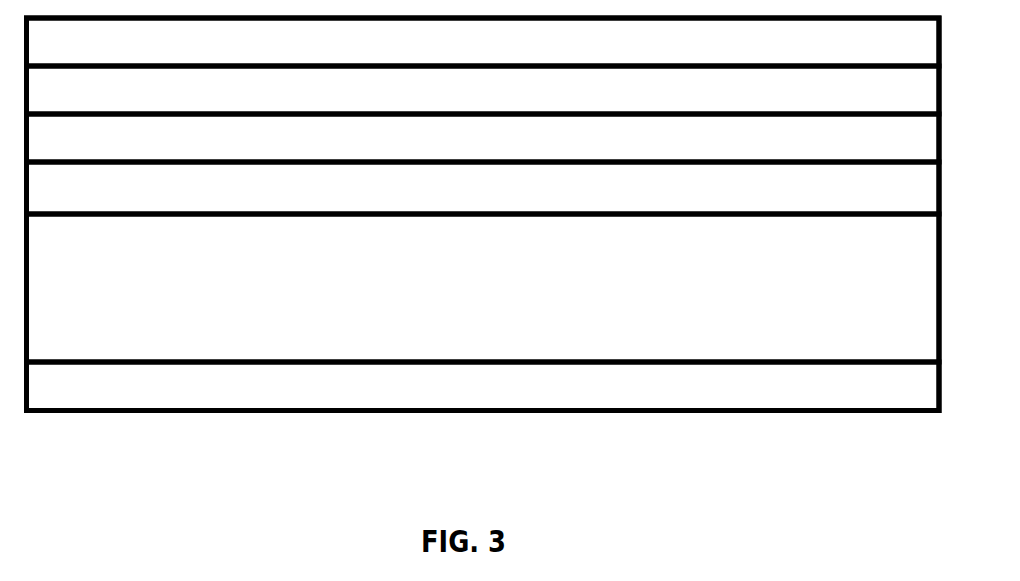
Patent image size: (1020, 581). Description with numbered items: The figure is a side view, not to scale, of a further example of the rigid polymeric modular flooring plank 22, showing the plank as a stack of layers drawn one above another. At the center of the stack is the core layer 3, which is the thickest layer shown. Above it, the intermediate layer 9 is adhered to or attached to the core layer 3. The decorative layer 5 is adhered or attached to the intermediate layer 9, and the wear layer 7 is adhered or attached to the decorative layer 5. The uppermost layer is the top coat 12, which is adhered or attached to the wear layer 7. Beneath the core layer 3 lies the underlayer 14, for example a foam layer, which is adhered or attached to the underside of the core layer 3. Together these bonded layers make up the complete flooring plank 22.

The top coat 12 is at (483, 42).
The wear layer 7 is at (483, 90).
The decorative layer 5 is at (483, 138).
The intermediate layer 9 is at (483, 188).
The core layer 3 is at (483, 288).
The underlayer 14 is at (483, 386).
The rigid polymeric modular flooring plank 22 is at (596, 421).